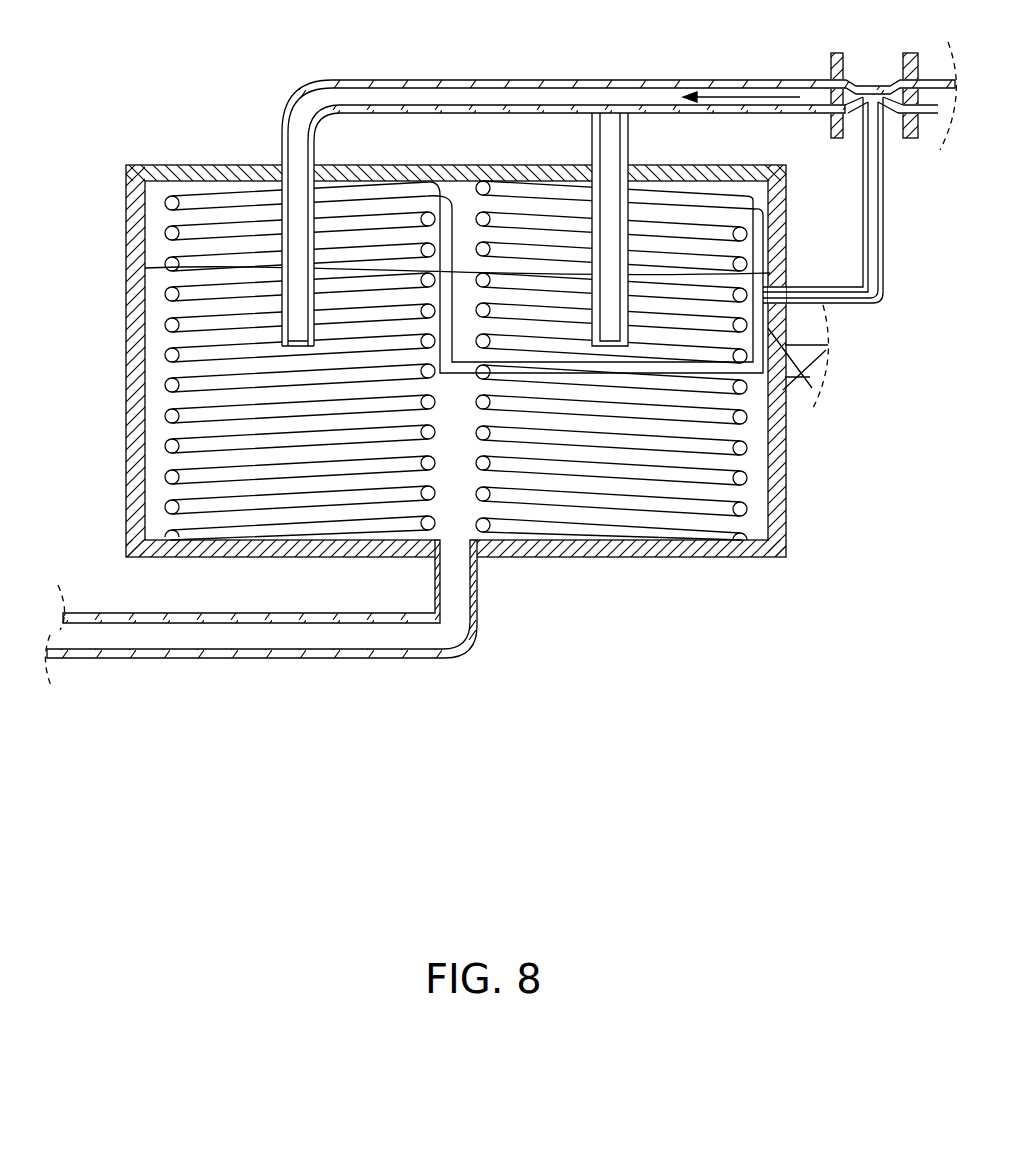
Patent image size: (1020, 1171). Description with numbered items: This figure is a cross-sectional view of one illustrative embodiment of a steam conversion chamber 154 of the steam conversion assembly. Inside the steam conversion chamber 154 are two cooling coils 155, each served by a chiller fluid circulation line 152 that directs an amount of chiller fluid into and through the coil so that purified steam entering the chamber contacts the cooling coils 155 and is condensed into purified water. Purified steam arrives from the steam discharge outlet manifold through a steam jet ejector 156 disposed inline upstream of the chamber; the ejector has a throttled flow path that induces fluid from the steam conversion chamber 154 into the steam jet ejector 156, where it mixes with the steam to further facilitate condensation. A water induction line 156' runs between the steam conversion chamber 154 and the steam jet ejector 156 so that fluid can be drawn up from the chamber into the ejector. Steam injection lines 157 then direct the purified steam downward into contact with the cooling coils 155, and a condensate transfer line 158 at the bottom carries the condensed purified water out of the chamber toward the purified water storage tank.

The chiller fluid circulation line 152 is at (808, 378).
The steam conversion chamber 154 is at (785, 520).
The cooling coil 155 is at (285, 478).
The steam jet ejector 156 is at (619, 180).
The water induction line 156' is at (860, 200).
The steam injection line 157 is at (318, 215).
The condensate transfer line 158 is at (310, 657).